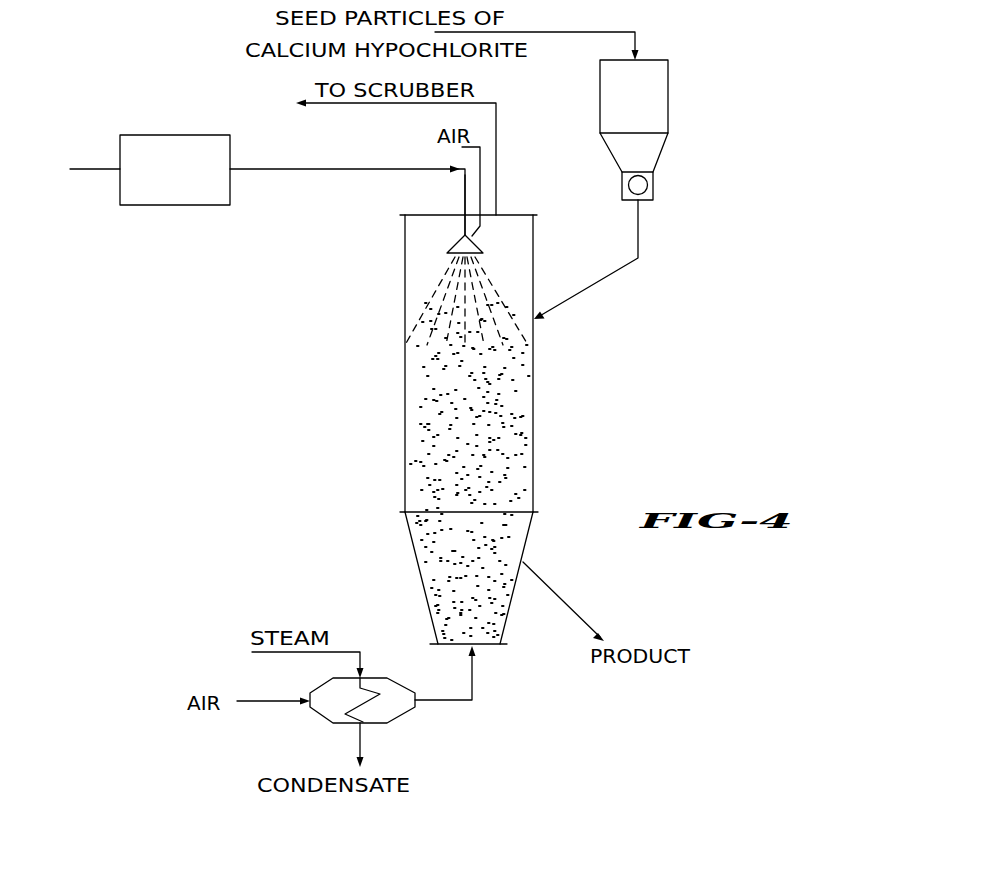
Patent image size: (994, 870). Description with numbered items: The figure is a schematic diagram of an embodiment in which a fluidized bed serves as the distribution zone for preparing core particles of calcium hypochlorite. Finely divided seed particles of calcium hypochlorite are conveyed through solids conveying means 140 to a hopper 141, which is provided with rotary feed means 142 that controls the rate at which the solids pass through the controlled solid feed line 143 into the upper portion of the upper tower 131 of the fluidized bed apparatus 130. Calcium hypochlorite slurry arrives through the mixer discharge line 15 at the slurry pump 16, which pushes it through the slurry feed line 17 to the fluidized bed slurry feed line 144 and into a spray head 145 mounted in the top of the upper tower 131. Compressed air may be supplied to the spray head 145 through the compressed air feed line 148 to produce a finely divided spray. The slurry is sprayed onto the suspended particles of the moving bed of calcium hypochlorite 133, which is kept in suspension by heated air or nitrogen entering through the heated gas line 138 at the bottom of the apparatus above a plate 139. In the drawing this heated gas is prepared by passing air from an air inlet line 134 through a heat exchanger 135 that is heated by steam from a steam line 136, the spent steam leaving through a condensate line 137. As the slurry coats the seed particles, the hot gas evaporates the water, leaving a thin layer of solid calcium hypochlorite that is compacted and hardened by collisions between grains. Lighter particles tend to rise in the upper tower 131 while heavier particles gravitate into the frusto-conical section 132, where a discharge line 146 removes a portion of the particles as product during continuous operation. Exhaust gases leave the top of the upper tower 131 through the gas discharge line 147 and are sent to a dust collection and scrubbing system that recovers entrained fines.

The mixer discharge line 15 is at (96, 168).
The slurry pump 16 is at (160, 206).
The slurry feed line 17 is at (326, 172).
The fluidized bed apparatus 130 is at (405, 408).
The upper tower 131 is at (533, 410).
The frusto-conical section 132 is at (417, 564).
The moving bed of calcium hypochlorite 133 is at (500, 474).
The air inlet line 134 is at (261, 704).
The heat exchanger 135 is at (405, 716).
The steam inlet line 136 is at (348, 652).
The condensate outlet line 137 is at (366, 743).
The heated gas line 138 is at (472, 690).
The perforated bottom plate 139 is at (497, 647).
The solids conveying means 140 is at (635, 32).
The hopper 141 is at (668, 114).
The rotary feed means 142 is at (653, 190).
The controlled solid feed line 143 is at (605, 282).
The fluidized bed slurry feed line 144 is at (465, 193).
The spray head 145 is at (475, 247).
The discharge line 146 is at (557, 588).
The gas discharge line 147 is at (496, 118).
The compressed air feed line 148 is at (480, 166).